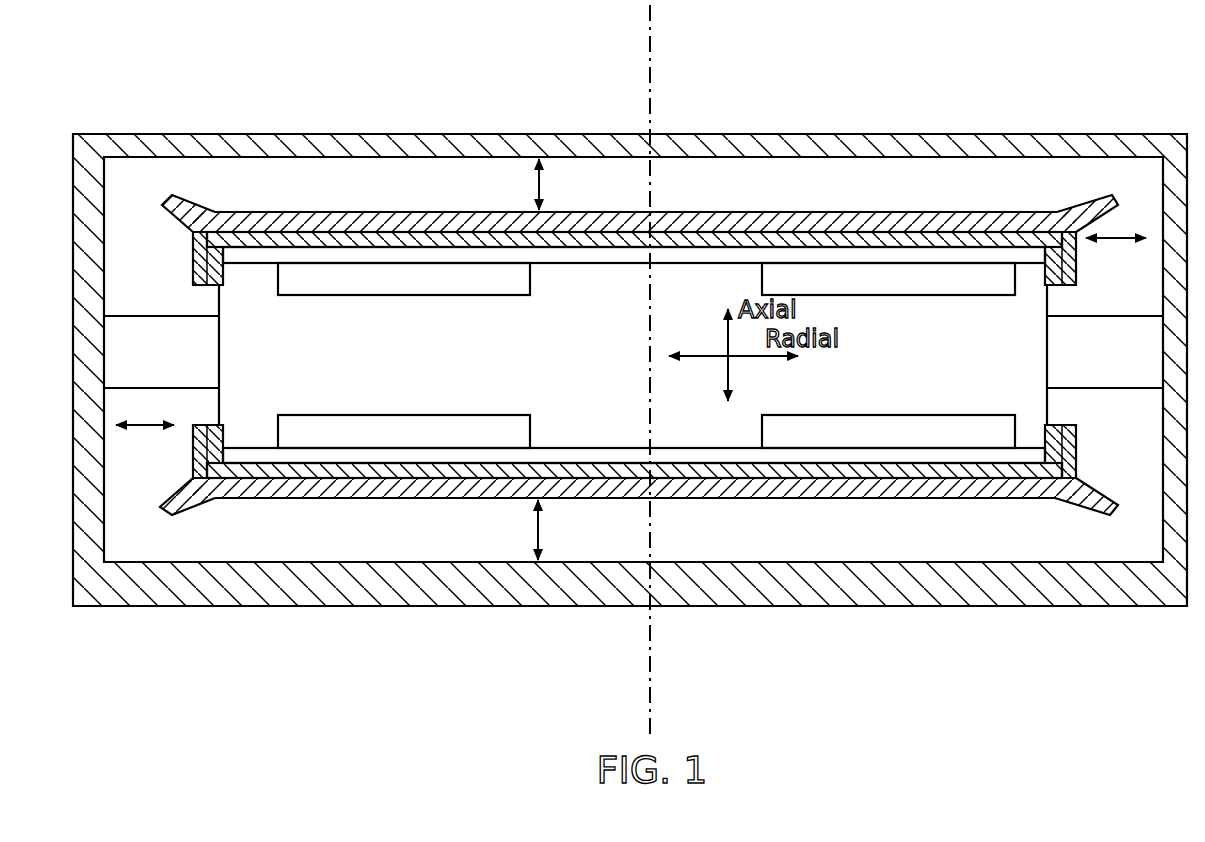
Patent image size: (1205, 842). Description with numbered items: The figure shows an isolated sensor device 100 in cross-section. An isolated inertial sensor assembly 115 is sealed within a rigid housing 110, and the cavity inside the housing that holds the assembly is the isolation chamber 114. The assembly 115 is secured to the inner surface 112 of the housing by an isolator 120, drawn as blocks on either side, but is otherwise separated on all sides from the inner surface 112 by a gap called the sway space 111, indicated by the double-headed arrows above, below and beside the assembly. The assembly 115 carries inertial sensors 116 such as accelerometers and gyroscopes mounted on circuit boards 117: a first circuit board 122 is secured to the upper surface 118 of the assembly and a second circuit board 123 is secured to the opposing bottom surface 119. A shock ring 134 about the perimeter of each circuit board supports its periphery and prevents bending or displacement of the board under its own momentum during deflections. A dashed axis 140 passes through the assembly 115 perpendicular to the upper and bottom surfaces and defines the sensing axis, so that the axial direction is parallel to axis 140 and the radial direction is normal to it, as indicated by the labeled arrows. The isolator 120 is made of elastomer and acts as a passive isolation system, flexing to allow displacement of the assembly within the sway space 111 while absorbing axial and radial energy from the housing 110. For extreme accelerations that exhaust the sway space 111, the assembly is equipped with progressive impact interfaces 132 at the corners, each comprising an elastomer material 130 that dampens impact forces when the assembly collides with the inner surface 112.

The isolated sensor device 100 is at (126, 72).
The rigid housing 110 is at (256, 133).
The sway space 111 is at (537, 185).
The inner surface 112 is at (805, 162).
The isolation chamber 114 is at (372, 168).
The isolated inertial sensor assembly 115 is at (633, 355).
The inertial sensors 116 is at (646, 355).
The circuit board 117 is at (690, 265).
The upper surface 118 is at (900, 238).
The bottom surface 119 is at (745, 501).
The isolator 120 is at (147, 316).
The first circuit board 122 is at (588, 270).
The second circuit board 123 is at (588, 440).
The elastomer material 130 is at (720, 226).
The progressive impact interface 132 is at (205, 197).
The shock ring 134 is at (201, 238).
The axis 140 is at (648, 68).